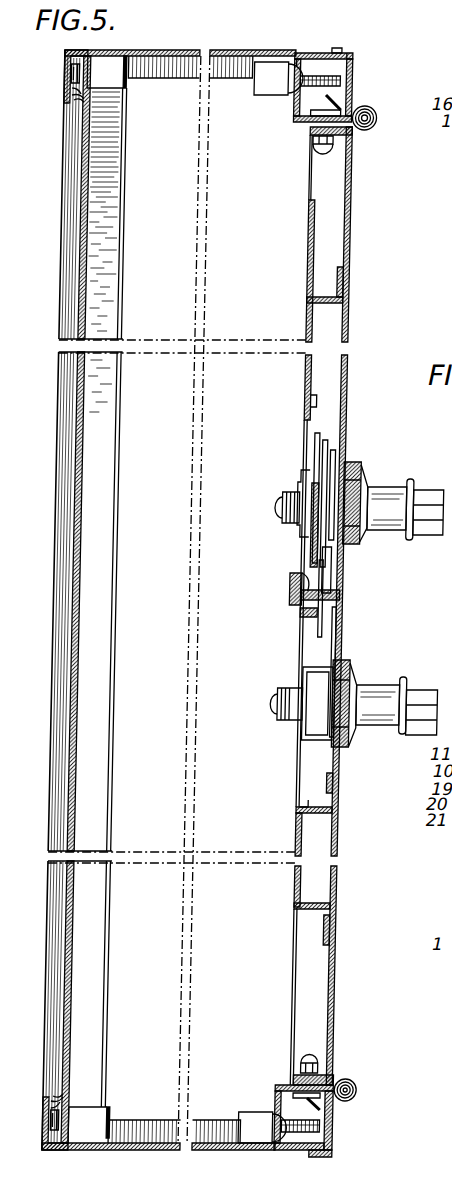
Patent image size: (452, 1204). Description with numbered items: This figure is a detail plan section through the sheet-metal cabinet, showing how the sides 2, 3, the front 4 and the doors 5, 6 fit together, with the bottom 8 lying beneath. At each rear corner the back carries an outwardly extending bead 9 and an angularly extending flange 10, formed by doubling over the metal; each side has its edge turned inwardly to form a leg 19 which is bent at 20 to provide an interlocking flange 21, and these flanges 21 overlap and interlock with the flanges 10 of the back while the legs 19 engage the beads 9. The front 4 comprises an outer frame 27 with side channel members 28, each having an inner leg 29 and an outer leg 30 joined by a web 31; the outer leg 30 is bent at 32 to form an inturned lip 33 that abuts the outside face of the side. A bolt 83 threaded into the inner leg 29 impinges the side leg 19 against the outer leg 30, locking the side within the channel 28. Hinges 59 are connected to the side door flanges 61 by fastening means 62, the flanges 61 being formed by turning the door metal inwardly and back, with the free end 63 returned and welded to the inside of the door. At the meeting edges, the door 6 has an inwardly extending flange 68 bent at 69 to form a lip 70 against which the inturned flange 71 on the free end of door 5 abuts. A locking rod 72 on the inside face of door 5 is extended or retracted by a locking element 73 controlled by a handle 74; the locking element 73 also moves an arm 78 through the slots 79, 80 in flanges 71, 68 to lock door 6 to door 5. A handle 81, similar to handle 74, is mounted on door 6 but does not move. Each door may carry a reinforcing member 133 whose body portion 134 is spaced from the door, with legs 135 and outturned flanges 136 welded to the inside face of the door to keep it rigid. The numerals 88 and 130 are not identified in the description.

The side 2 is at (131, 51).
The side 3 is at (241, 1150).
The front 4 is at (354, 83).
The swinging door 5 is at (356, 321).
The swinging door 6 is at (356, 828).
The bottom 8 is at (158, 873).
The bead 9 is at (68, 55).
The flange 10 is at (73, 75).
The leg 19 is at (74, 92).
The bend 20 is at (78, 97).
The interlocking flange 21 is at (82, 100).
The outer frame 27 is at (354, 100).
The side channel member 28 is at (298, 118).
The inner leg 29 is at (333, 1108).
The outer leg 30 is at (356, 1138).
The web 31 is at (314, 1085).
The bend 32 is at (352, 55).
The lip 33 is at (339, 48).
The hinge 59 is at (379, 128).
The side door flange 61 is at (314, 132).
The fastening means 62 is at (316, 152).
The free end 63 is at (312, 165).
The inwardly extending flange 68 is at (312, 622).
The bend 69 is at (313, 612).
The lip 70 is at (303, 588).
The inturned flange 71 is at (322, 573).
The locking rod 72 is at (337, 473).
The locking element 73 is at (310, 483).
The handle 74 is at (430, 500).
The arm 78 is at (343, 583).
The slot 79 is at (352, 598).
The slot 80 is at (355, 625).
The handle 81 is at (383, 683).
The bolt 83 is at (283, 68).
The pin 88 is at (298, 53).
The channel wall 130 is at (313, 385).
The reinforcing member 133 is at (313, 306).
The body portion 134 is at (313, 822).
The leg 135 is at (313, 400).
The outturned flange 136 is at (349, 280).